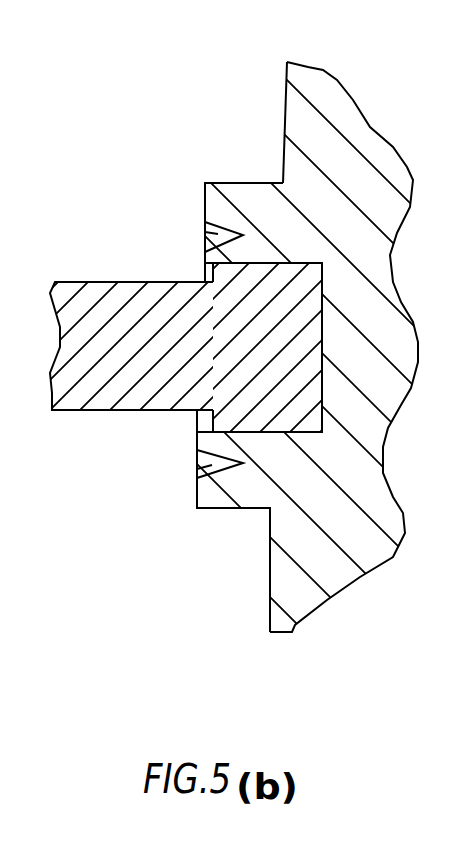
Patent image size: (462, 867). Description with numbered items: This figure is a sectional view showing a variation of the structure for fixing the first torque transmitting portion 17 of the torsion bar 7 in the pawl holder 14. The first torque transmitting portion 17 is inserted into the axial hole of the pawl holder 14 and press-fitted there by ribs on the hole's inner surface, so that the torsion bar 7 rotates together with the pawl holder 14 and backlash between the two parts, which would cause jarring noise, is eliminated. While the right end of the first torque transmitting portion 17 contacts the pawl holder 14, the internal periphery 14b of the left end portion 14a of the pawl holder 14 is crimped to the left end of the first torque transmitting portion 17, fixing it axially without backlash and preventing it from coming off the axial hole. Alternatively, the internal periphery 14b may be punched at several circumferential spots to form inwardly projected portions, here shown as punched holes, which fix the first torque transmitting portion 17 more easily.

The pawl holder 14 is at (372, 127).
The left end portion of the pawl holder 14a is at (245, 190).
The internal periphery of the left end portion 14b is at (205, 256).
The first torque transmitting portion 17 is at (282, 350).
The torsion bar 7 is at (103, 308).